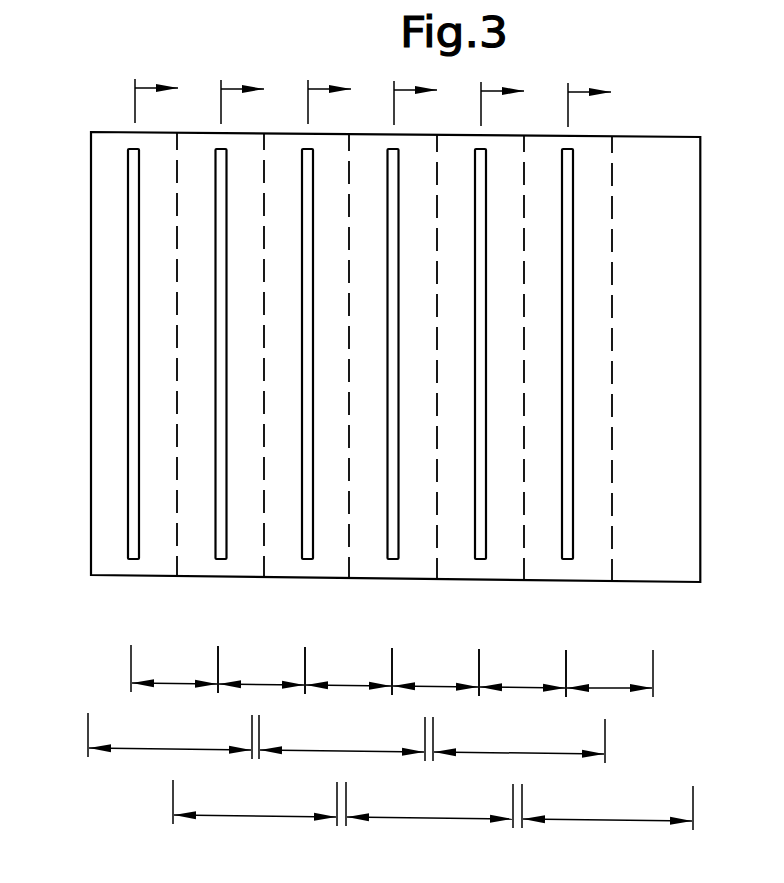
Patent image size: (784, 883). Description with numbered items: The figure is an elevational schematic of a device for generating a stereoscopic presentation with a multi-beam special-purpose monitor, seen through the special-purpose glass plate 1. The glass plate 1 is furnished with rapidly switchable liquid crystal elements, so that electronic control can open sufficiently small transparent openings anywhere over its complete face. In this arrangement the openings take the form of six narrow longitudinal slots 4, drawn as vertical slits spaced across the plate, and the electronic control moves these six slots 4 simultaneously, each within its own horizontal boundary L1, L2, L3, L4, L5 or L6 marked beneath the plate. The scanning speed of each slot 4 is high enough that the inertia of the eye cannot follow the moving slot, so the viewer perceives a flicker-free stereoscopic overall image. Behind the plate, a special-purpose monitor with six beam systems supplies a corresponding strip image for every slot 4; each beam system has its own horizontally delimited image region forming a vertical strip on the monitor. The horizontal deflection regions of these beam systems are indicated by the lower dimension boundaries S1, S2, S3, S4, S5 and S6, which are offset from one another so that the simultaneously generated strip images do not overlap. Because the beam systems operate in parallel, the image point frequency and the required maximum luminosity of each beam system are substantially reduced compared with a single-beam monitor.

The special-purpose glass plate 1 is at (637, 583).
The longitudinal slot 4 is at (391, 354).
The boundary L1 is at (174, 668).
The boundary L2 is at (261, 669).
The boundary L3 is at (348, 670).
The boundary L4 is at (435, 671).
The boundary L5 is at (522, 672).
The boundary L6 is at (609, 673).
The boundary S1 is at (170, 734).
The boundary S2 is at (255, 801).
The boundary S3 is at (342, 736).
The boundary S4 is at (429, 803).
The boundary S5 is at (519, 738).
The boundary S6 is at (607, 805).